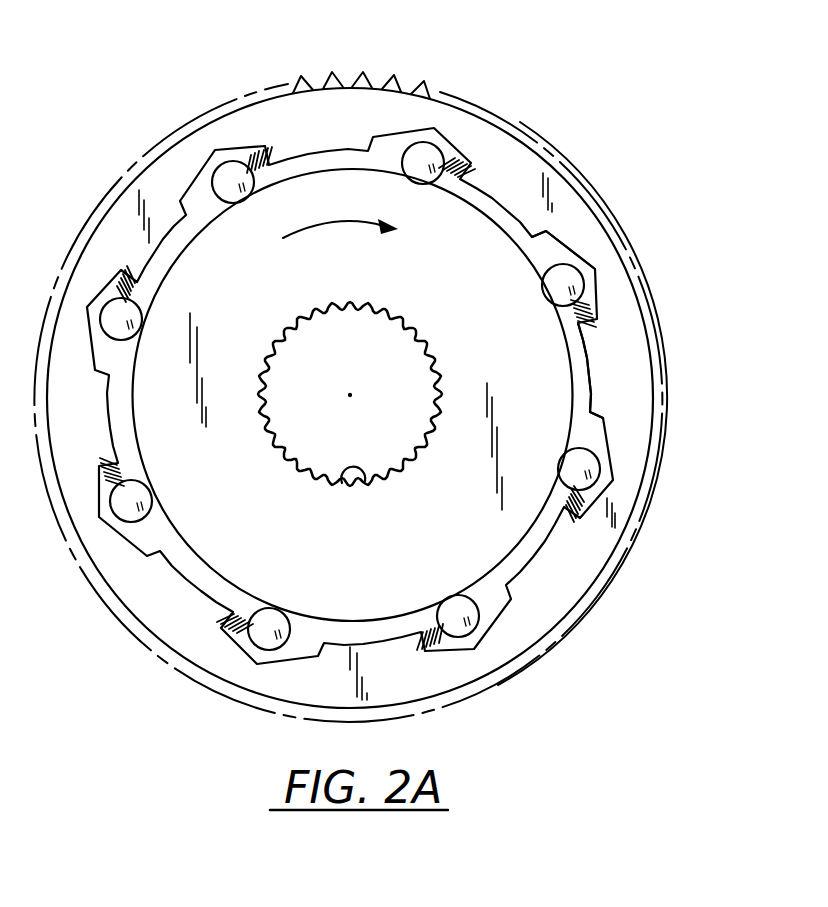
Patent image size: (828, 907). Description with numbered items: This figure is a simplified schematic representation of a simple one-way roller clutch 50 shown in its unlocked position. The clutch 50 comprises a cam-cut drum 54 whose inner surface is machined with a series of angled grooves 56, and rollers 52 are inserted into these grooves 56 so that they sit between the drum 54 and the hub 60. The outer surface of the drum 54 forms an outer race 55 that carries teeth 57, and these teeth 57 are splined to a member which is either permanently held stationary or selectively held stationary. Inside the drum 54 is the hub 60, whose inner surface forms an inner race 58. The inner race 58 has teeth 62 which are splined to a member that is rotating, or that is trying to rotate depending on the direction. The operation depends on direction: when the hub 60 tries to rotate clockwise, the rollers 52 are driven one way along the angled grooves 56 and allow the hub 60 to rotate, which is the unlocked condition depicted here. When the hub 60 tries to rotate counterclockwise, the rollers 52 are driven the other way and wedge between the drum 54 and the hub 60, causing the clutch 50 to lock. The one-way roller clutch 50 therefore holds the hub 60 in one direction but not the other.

The one-way roller clutch 50 is at (690, 162).
The rollers 52 is at (571, 283).
The cam-cut drum 54 is at (547, 183).
The outer race 55 is at (414, 81).
The angled grooves 56 is at (551, 241).
The teeth 57 is at (362, 71).
The inner race 58 is at (414, 450).
The hub 60 is at (494, 413).
The teeth 62 is at (362, 488).